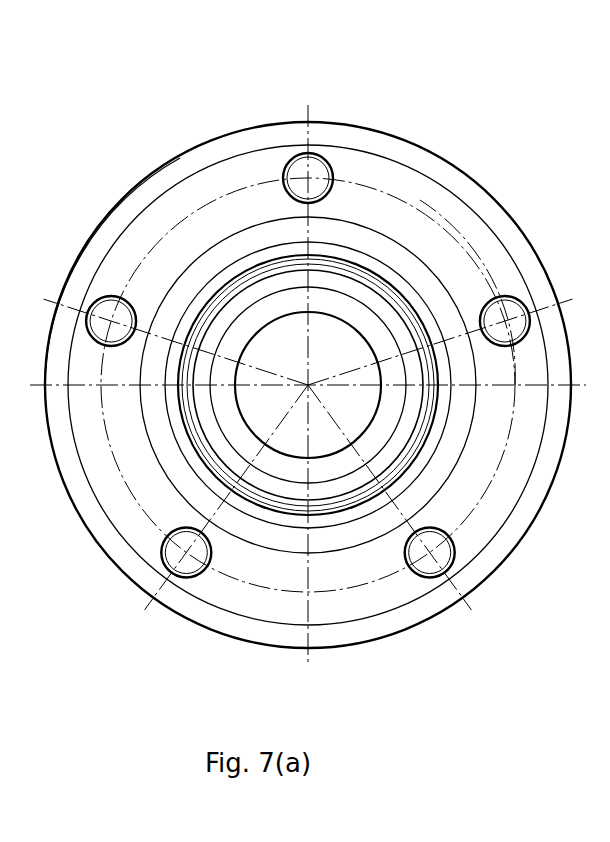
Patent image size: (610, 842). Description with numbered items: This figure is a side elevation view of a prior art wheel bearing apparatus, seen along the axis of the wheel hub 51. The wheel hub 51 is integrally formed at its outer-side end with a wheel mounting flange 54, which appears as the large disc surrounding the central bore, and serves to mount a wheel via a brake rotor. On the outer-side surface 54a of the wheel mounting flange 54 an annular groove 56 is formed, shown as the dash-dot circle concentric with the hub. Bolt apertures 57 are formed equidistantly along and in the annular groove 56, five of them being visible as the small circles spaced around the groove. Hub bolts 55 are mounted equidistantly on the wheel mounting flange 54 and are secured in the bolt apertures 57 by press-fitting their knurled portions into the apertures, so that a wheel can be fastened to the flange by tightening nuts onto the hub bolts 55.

The wheel hub 51 is at (321, 119).
The wheel mounting flange 54 is at (417, 153).
The outer-side surface of the wheel mounting flange 54a is at (157, 187).
The hub bolts 55 is at (305, 165).
The annular groove 56 is at (473, 233).
The bolt apertures 57 is at (318, 180).